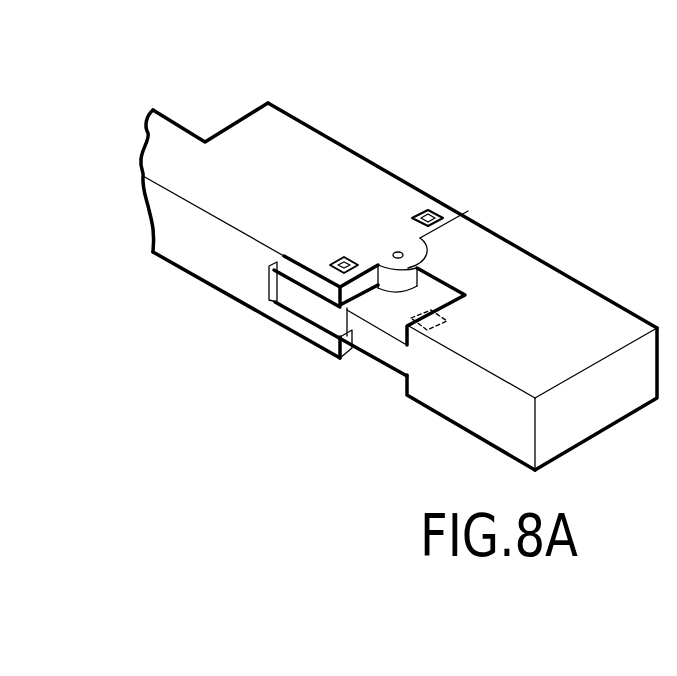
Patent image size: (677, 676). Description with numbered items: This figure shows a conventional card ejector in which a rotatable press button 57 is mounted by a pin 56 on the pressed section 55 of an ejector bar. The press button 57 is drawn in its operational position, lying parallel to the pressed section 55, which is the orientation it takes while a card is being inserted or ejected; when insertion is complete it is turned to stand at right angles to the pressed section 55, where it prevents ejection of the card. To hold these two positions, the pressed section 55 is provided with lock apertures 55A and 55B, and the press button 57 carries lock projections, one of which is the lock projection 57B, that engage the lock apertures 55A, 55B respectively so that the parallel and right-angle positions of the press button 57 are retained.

The pressed section 55 is at (267, 148).
The lock aperture 55A is at (429, 217).
The lock aperture 55B is at (347, 255).
The pin 56 is at (396, 254).
The rotatable press button 57 is at (545, 300).
The lock projection 57B is at (420, 318).